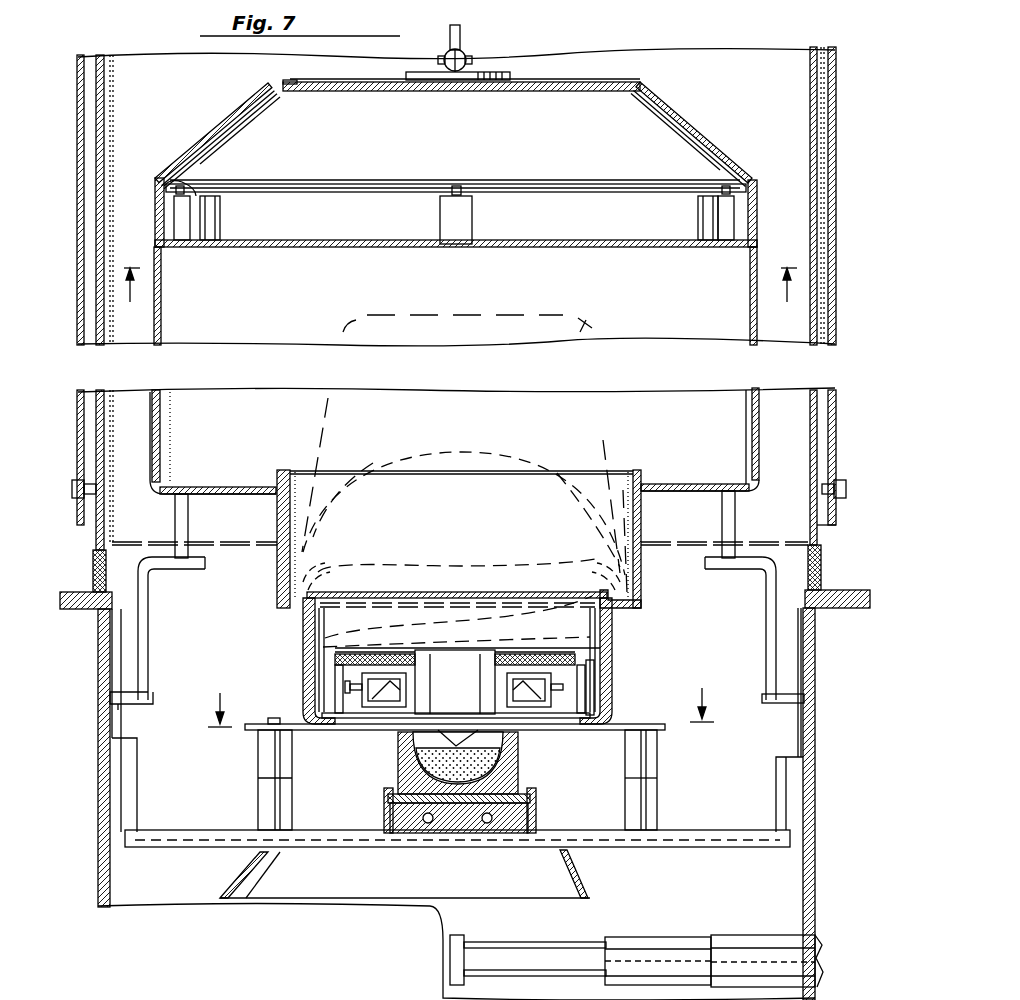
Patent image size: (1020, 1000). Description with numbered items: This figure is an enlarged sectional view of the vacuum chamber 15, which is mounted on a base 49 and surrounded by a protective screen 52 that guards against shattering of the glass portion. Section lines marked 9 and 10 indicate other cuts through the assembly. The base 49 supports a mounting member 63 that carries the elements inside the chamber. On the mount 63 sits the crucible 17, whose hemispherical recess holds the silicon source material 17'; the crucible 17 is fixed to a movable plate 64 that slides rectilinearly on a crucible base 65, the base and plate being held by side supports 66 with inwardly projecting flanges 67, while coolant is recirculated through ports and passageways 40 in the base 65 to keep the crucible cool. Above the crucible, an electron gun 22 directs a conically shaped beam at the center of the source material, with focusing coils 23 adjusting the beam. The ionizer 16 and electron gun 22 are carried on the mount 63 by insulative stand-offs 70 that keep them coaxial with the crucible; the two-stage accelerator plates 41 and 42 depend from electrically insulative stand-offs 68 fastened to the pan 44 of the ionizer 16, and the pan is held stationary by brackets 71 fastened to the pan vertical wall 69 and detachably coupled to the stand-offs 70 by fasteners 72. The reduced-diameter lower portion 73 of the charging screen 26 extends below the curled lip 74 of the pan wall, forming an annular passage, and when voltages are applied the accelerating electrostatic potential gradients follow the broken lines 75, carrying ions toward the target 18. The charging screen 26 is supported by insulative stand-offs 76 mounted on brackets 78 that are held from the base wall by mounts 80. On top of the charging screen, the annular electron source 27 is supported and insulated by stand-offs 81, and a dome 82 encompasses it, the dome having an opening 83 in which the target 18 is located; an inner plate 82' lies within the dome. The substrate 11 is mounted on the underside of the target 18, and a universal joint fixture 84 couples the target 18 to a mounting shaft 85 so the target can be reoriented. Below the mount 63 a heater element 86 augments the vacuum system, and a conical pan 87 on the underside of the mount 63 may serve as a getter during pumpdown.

The section line 9- 9 is at (461, 700).
The section line 10- 10 is at (454, 301).
The substrate 11 is at (545, 100).
The vacuum chamber 15 is at (818, 140).
The ionizer 16 is at (586, 646).
The crucible 17 is at (421, 762).
The silicon source material 17' is at (497, 765).
The target 18 is at (583, 84).
The electron gun 22 is at (378, 683).
The coils 23 is at (606, 664).
The charging screen 26 is at (760, 428).
The electron source 27 is at (168, 180).
The ports and passageways 40 is at (428, 824).
The first accelerator plate 41 is at (536, 713).
The second accelerator plate 42 is at (560, 718).
The pan 44 is at (598, 690).
The base 49 is at (815, 694).
The protective screen 52 is at (834, 184).
The mounting member 63 is at (714, 834).
The movable plate 64 is at (525, 798).
The crucible base 65 is at (528, 813).
The side supports 66 is at (384, 818).
The inwardly projecting flanges 67 is at (384, 792).
The electrically insulative stand-offs 68 is at (563, 687).
The pan vertical wall 69 is at (305, 640).
The insulative stand-offs 70 is at (266, 763).
The brackets 71 is at (340, 663).
The fasteners 72 is at (276, 716).
The lower portion of the charging screen 73 is at (643, 522).
The curled lip 74 is at (612, 602).
The broken lines 75 is at (586, 322).
The insulative stand-offs 76 is at (190, 522).
The brackets 78 is at (149, 643).
The mounts 80 is at (150, 700).
The stand-offs 81 is at (180, 220).
The dome 82 is at (691, 134).
The hood inner plate 82' is at (456, 212).
The opening 83 is at (262, 88).
The universal joint fixture 84 is at (465, 58).
The mounting shaft 85 is at (460, 32).
The heater element 86 is at (562, 938).
The conical pan 87 is at (576, 890).